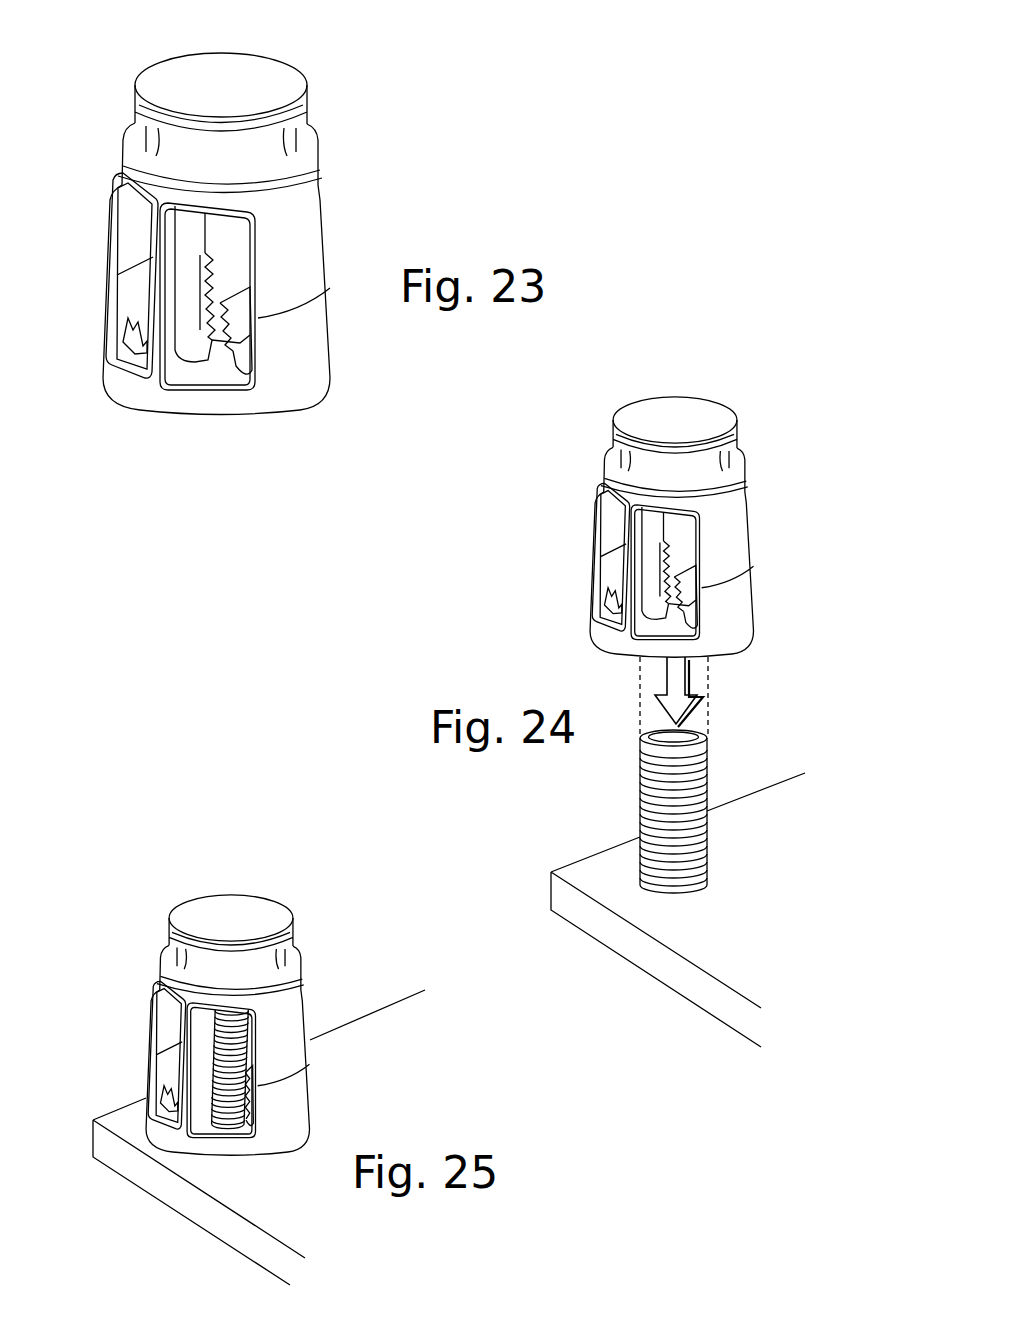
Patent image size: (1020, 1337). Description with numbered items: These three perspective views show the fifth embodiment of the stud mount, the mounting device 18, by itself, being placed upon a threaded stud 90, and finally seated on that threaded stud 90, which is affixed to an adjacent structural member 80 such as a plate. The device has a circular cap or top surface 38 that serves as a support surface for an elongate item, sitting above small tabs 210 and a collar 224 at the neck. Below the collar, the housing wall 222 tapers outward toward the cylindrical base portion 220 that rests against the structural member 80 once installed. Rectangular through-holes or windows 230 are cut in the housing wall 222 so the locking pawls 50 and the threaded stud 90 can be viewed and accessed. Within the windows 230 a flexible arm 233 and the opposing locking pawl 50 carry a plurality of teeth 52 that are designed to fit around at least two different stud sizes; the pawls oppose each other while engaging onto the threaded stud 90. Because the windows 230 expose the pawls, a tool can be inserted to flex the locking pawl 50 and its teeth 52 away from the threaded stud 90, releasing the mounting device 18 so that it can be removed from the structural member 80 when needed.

In FIG. 23, the connector assembly 18 is at (328, 48).
In FIG. 24, the connector assembly 18 is at (753, 398).
In FIG. 25, the connector assembly 18 is at (292, 898).
In FIG. 23, the cap 38 is at (203, 72).
In FIG. 24, the cap 38 is at (660, 425).
In FIG. 25, the cap 38 is at (215, 922).
In FIG. 23, the engagement arm 50 is at (238, 345).
In FIG. 24, the engagement arm 50 is at (703, 582).
In FIG. 25, the engagement arm 50 is at (250, 1098).
In FIG. 23, the teeth 52 is at (202, 275).
In FIG. 24, the teeth 52 is at (657, 557).
In FIG. 25, the teeth 52 is at (252, 1062).
In FIG. 24, the structural member 80 is at (580, 875).
In FIG. 25, the structural member 80 is at (132, 1128).
In FIG. 24, the threaded stud 90 is at (640, 788).
In FIG. 25, the threaded stud 90 is at (223, 1127).
In FIG. 23, the tabs 210 is at (134, 133).
In FIG. 24, the tabs 210 is at (612, 453).
In FIG. 25, the tabs 210 is at (168, 953).
In FIG. 23, the housing base 220 is at (300, 351).
In FIG. 24, the housing base 220 is at (740, 603).
In FIG. 25, the housing base 220 is at (290, 1130).
In FIG. 23, the tapered housing wall 222 is at (300, 241).
In FIG. 24, the tapered housing wall 222 is at (733, 530).
In FIG. 25, the tapered housing wall 222 is at (280, 1018).
In FIG. 23, the collar 224 is at (275, 158).
In FIG. 24, the collar 224 is at (700, 478).
In FIG. 25, the collar 224 is at (212, 973).
In FIG. 23, the windows 230 is at (218, 227).
In FIG. 24, the windows 230 is at (673, 532).
In FIG. 25, the windows 230 is at (177, 1007).
In FIG. 23, the flexible arm 233 is at (185, 358).
In FIG. 24, the flexible arm 233 is at (650, 610).